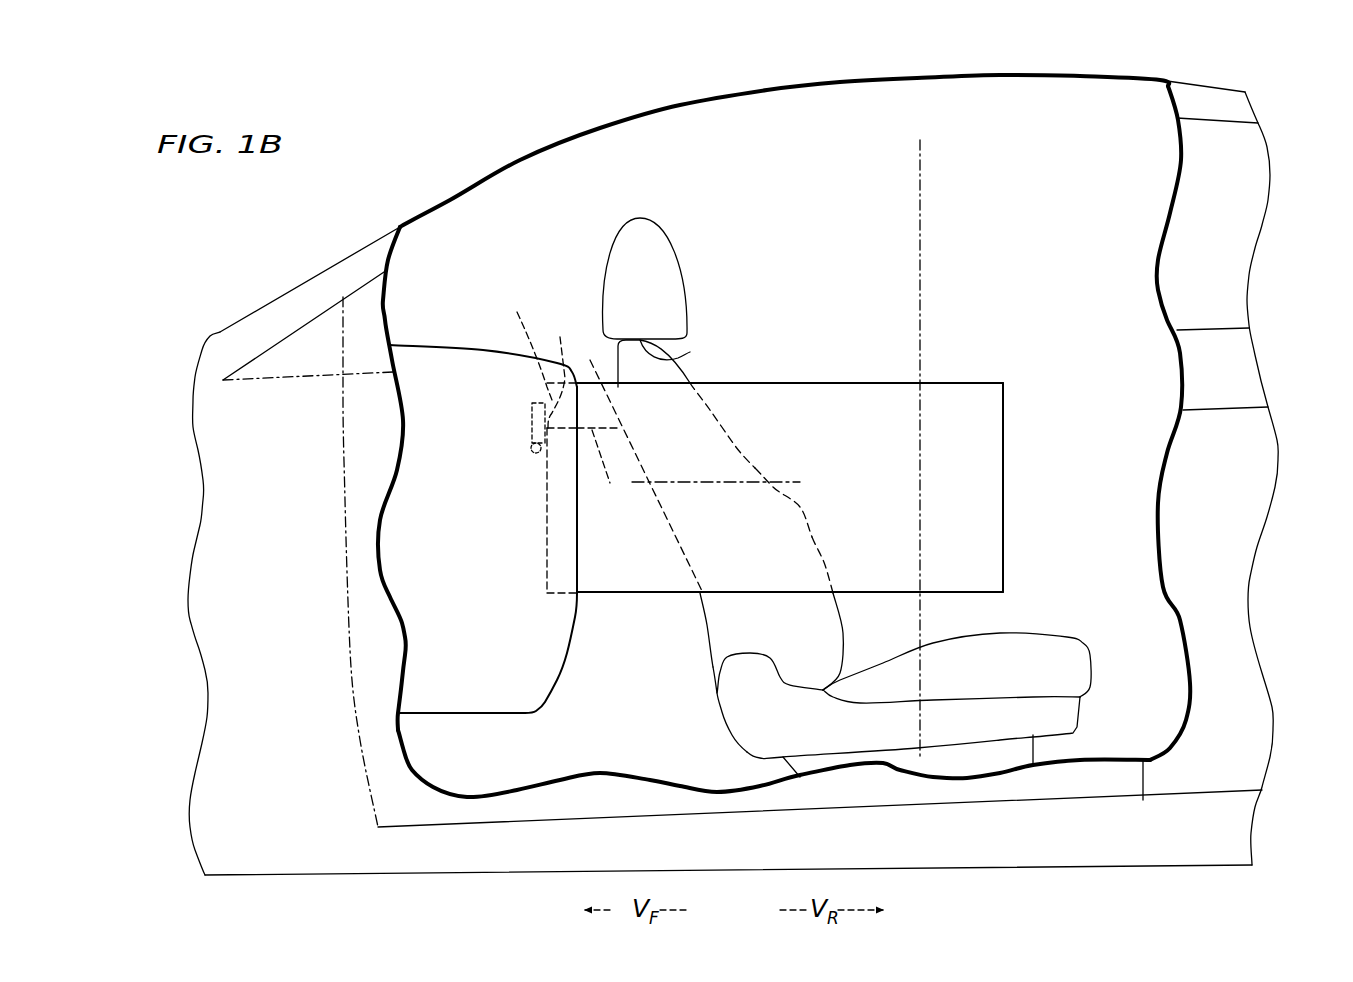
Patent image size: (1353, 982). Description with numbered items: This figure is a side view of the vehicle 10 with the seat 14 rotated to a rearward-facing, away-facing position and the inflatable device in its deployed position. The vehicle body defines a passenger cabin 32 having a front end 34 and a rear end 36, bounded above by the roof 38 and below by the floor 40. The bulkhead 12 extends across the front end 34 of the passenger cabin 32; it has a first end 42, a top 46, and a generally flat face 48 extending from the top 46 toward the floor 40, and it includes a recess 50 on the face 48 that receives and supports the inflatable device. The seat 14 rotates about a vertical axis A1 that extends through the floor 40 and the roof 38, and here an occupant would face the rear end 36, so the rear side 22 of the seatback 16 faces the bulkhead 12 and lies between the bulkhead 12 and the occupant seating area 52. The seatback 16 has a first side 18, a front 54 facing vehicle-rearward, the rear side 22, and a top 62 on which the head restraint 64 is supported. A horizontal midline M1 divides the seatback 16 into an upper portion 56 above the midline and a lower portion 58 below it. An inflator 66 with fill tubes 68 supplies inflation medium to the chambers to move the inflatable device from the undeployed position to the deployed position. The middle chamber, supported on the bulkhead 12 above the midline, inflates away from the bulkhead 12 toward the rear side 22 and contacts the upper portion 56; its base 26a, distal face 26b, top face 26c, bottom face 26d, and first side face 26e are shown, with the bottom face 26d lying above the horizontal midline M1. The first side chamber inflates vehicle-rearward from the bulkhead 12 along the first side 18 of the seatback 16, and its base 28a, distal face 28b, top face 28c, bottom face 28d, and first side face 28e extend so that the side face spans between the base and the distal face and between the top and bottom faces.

The vehicle 10 is at (517, 90).
The bulkhead 12 is at (462, 713).
The seat 14 is at (727, 715).
The seatback 16 is at (713, 657).
The first side 18 is at (780, 622).
The rear side 22 is at (710, 632).
The base 26a is at (527, 346).
The distal face 26b is at (640, 464).
The top face 26c is at (564, 369).
The bottom face 26d is at (606, 471).
The first side face 26e is at (598, 415).
The base 28a is at (550, 530).
The distal face 28b is at (1005, 497).
The top face 28c is at (962, 380).
The bottom face 28d is at (970, 593).
The first side face 28e is at (977, 540).
The passenger cabin 32 is at (788, 133).
The front end 34 is at (417, 290).
The rear end 36 is at (1163, 150).
The roof 38 is at (987, 78).
The floor 40 is at (1143, 713).
The first end 42 is at (442, 632).
The top 46 is at (463, 350).
The face 48 is at (580, 600).
The recess 50 is at (547, 543).
The occupant seating area 52 is at (828, 494).
The front 54 is at (807, 533).
The upper portion 56 is at (737, 430).
The lower portion 58 is at (833, 570).
The top 62 is at (690, 352).
The head restraint 64 is at (683, 273).
The inflator 66 is at (530, 448).
The fill tubes 68 is at (530, 408).
The vertical axis A1 is at (919, 434).
The horizontal midline M1 is at (777, 483).